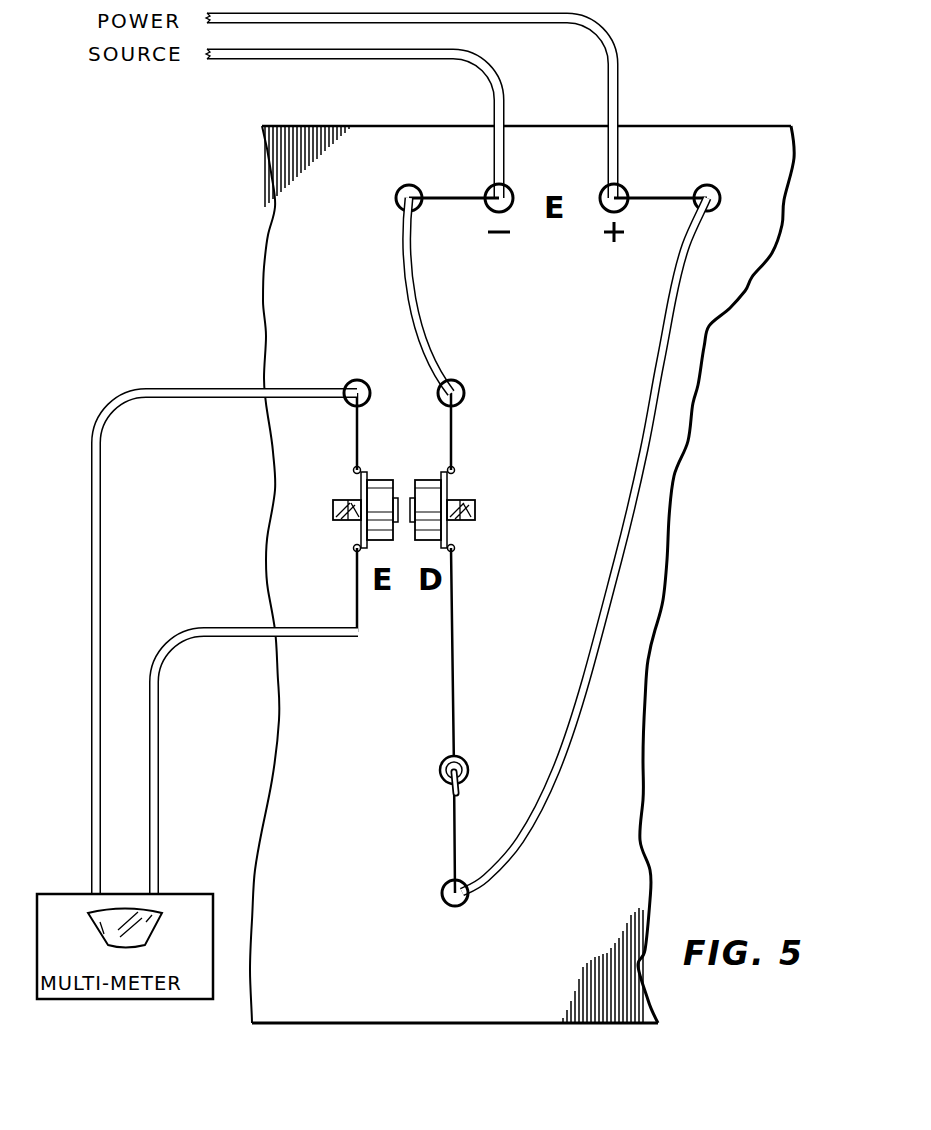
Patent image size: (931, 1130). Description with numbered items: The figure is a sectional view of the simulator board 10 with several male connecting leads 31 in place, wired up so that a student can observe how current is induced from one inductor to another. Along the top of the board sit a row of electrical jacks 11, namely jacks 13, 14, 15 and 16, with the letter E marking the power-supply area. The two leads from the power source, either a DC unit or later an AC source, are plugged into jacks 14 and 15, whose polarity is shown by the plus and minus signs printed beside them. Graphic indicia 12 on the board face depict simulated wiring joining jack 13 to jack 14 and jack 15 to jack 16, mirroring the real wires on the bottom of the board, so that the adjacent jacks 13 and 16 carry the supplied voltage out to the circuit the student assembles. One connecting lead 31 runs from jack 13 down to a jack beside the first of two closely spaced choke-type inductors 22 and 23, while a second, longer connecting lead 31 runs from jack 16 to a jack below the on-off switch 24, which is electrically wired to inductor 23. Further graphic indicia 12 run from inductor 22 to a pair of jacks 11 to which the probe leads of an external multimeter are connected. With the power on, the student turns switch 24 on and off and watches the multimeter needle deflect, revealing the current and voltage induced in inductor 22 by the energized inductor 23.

The simulator board 10 is at (792, 113).
The electrical jacks 11 is at (352, 384).
The graphic indicia 12 is at (456, 199).
The jack 13 is at (406, 188).
The jack 14 is at (490, 190).
The jack 15 is at (624, 190).
The jack 16 is at (712, 190).
The choke-type inductor 22 is at (378, 470).
The choke-type inductor 23 is at (416, 470).
The on-off switch 24 is at (466, 765).
The connecting leads 31 is at (406, 288).